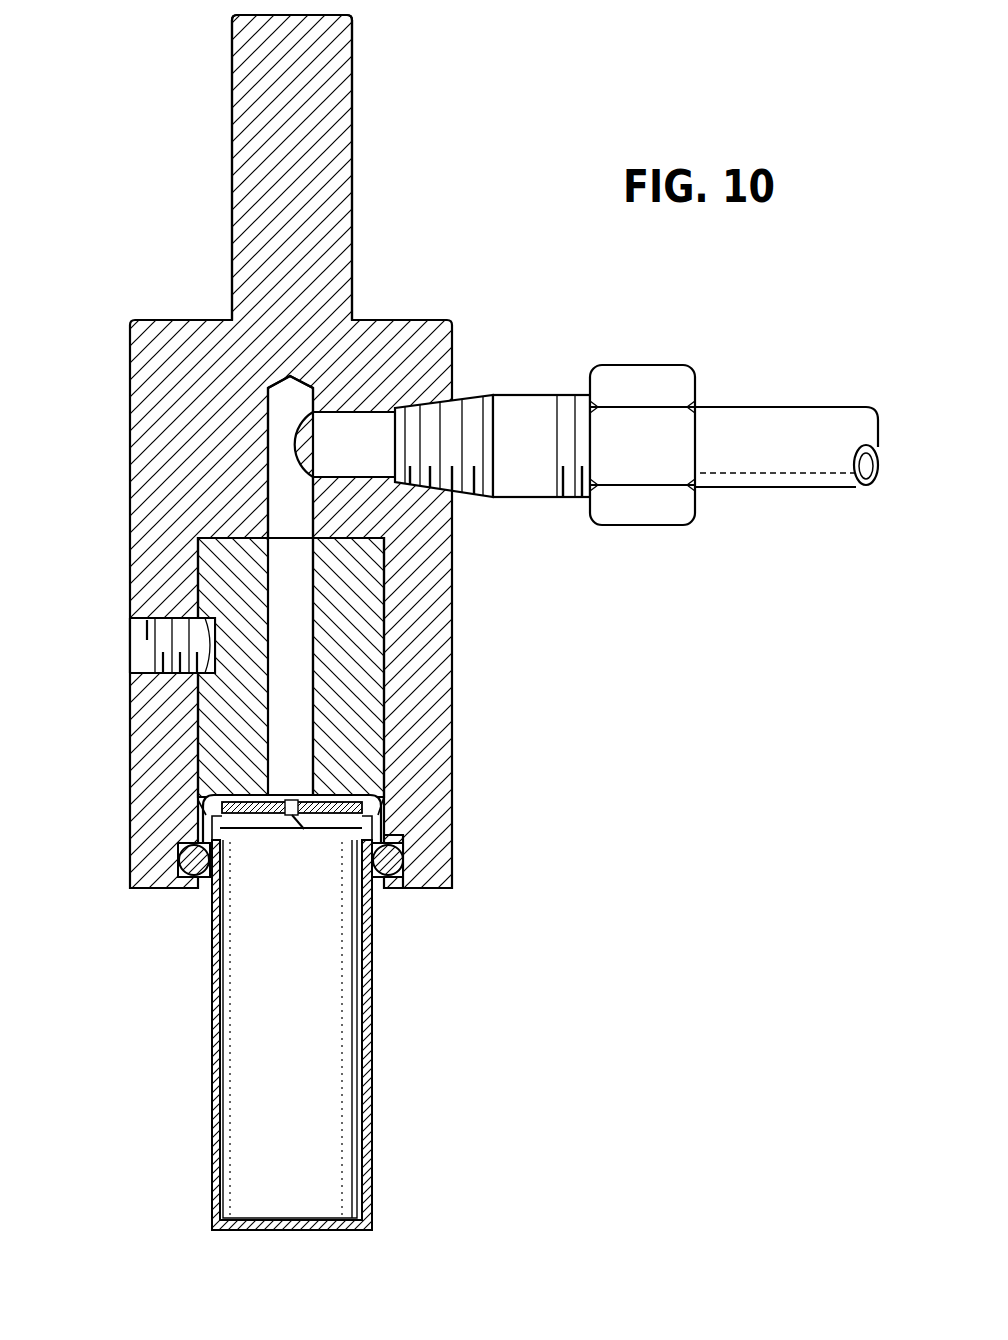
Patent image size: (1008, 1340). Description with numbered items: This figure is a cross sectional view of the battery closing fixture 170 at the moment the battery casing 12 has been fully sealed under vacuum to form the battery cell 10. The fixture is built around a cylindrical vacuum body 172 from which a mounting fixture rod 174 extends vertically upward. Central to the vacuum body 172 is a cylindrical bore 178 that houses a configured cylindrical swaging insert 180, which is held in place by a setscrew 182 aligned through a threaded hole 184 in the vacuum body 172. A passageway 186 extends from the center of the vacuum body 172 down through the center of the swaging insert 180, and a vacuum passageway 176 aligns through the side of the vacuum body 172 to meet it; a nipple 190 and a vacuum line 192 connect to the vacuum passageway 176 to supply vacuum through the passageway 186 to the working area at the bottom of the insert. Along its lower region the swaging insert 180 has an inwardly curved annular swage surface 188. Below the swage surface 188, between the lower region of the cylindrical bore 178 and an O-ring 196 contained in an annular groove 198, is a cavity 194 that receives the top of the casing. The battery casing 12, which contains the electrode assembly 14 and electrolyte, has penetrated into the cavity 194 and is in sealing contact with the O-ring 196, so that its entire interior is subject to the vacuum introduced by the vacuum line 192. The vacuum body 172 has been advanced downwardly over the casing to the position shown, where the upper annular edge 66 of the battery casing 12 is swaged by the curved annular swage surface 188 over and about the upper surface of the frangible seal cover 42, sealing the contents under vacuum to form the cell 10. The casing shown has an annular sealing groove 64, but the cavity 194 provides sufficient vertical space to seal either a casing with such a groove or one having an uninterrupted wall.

The battery cell 10 is at (180, 1031).
The battery casing 12 is at (373, 1106).
The electrode assembly 14 is at (330, 1036).
The frangible seal cover 42 is at (297, 816).
The annular sealing groove 64 is at (200, 830).
The upper annular edge 66 is at (244, 803).
The battery closing fixture 170 is at (508, 172).
The vacuum body 172 is at (148, 486).
The mounting fixture rod 174 is at (336, 116).
The vacuum passageway 176 is at (466, 398).
The cylindrical bore 178 is at (394, 662).
The swaging insert 180 is at (364, 692).
The setscrew 182 is at (186, 644).
The threaded hole 184 is at (130, 653).
The passageway 186 is at (276, 466).
The swage surface 188 is at (206, 816).
The nipple 190 is at (518, 472).
The vacuum line 192 is at (722, 426).
The cavity 194 is at (396, 836).
The O-ring 196 is at (382, 870).
The annular groove 198 is at (392, 840).